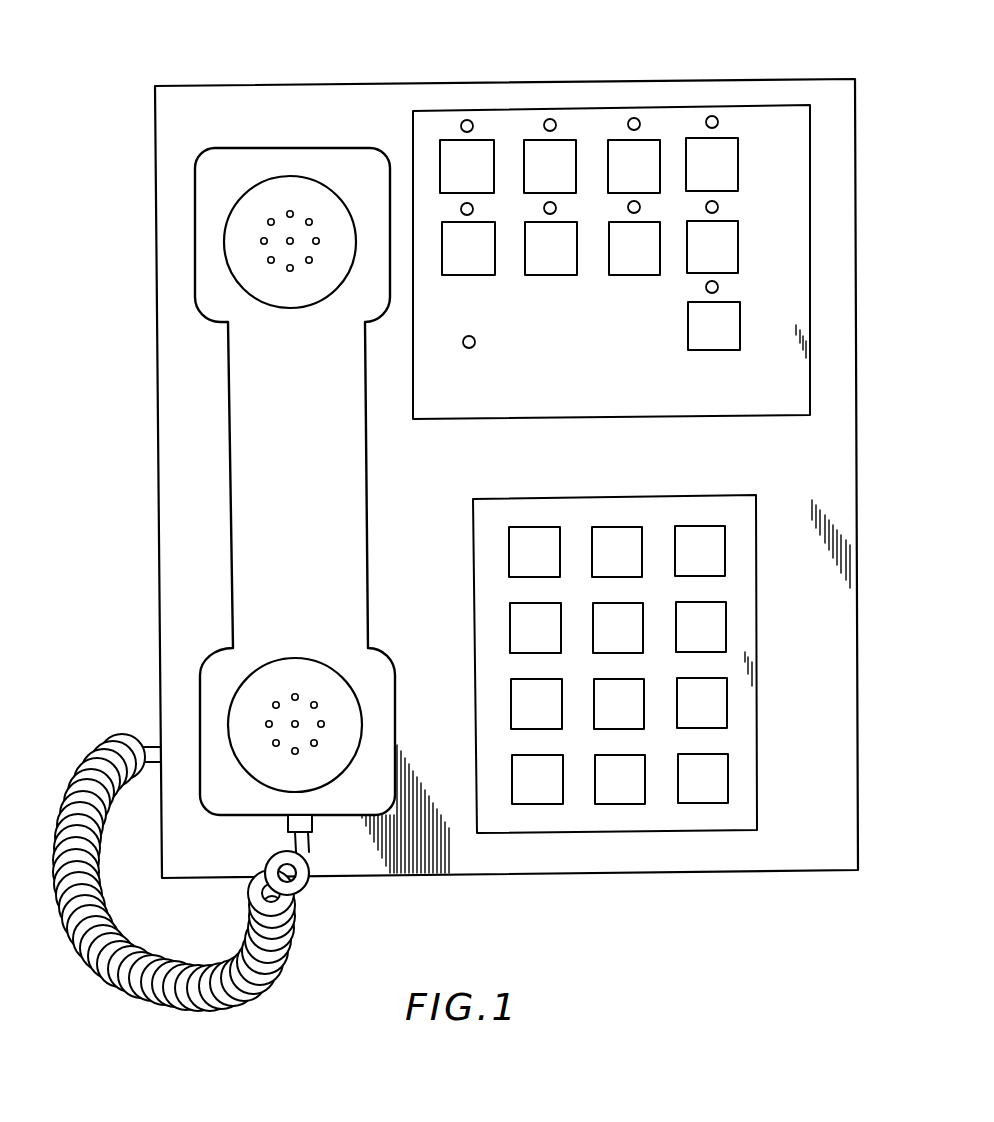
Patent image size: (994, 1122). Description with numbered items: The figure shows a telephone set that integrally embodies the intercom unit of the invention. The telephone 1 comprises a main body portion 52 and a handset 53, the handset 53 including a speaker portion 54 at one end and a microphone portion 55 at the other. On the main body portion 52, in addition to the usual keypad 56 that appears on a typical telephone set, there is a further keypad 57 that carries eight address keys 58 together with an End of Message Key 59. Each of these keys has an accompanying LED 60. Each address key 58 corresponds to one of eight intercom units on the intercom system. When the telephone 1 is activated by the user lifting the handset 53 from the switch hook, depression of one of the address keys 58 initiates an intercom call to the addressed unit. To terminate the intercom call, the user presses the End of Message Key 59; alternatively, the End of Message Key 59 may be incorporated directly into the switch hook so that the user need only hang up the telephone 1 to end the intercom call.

The telephone 1 is at (341, 60).
The main body portion 52 is at (833, 242).
The handset 53 is at (224, 579).
The speaker portion 54 is at (248, 240).
The microphone portion 55 is at (257, 708).
The keypad 56 is at (747, 753).
The keypad 57 is at (653, 259).
The address keys 58 is at (745, 119).
The End of Message Key 59 is at (740, 328).
The LED 60 is at (719, 122).